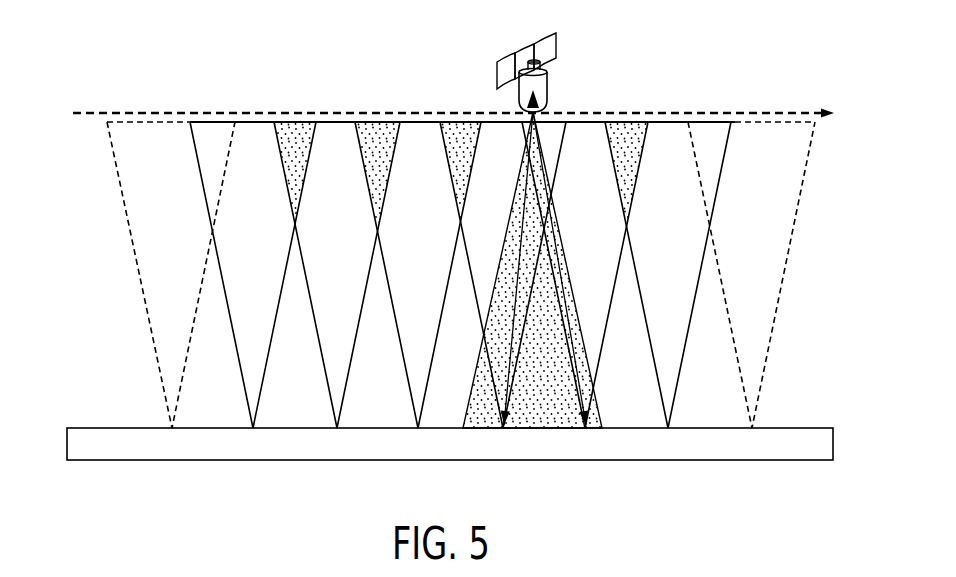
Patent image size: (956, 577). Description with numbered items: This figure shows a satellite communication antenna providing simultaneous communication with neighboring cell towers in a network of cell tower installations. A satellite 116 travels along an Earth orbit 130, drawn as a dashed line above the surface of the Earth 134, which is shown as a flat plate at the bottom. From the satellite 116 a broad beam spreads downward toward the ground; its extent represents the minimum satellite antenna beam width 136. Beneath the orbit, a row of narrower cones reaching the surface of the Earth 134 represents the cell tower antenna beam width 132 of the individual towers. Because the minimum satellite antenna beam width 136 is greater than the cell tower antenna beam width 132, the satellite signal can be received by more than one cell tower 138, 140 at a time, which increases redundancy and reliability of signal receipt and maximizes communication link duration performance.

The satellite 116 is at (565, 56).
The Earth orbit 130 is at (153, 105).
The cell tower antenna beam width 132 is at (718, 238).
The surface of the Earth 134 is at (89, 416).
The minimum satellite antenna beam width 136 is at (533, 432).
The cell tower 138 is at (501, 436).
The cell tower 140 is at (590, 437).